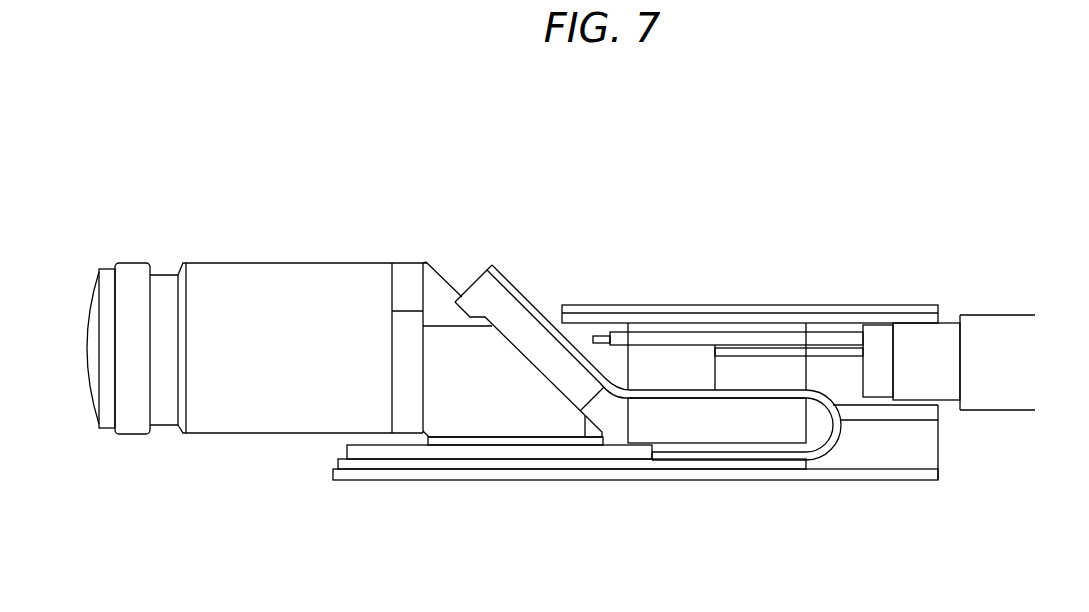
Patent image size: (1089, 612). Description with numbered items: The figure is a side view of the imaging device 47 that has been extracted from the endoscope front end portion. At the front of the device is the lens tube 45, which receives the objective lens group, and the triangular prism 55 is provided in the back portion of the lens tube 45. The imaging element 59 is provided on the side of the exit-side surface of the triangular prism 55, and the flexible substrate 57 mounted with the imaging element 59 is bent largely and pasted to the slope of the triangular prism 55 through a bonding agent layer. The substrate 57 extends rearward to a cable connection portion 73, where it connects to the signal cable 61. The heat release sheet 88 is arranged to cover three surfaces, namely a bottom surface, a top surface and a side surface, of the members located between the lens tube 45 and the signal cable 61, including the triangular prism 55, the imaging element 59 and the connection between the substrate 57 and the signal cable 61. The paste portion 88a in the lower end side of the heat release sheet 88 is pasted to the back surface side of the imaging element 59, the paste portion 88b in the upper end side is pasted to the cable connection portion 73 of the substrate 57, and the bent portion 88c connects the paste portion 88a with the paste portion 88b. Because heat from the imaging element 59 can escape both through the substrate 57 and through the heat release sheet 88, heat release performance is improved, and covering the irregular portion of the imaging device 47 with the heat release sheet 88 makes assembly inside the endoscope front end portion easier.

The lens tube 45 is at (268, 262).
The imaging device 47 is at (345, 278).
The triangular prism 55 is at (455, 368).
The flexible substrate 57 is at (506, 281).
The imaging element 59 is at (519, 480).
The signal cable 61 is at (1000, 335).
The cable connection portion 73 is at (833, 331).
The heat release sheet 88 is at (694, 388).
The paste portion for the back surface of the imaging element 88a is at (681, 478).
The paste portion 88b is at (703, 305).
The bent portion 88c is at (927, 438).